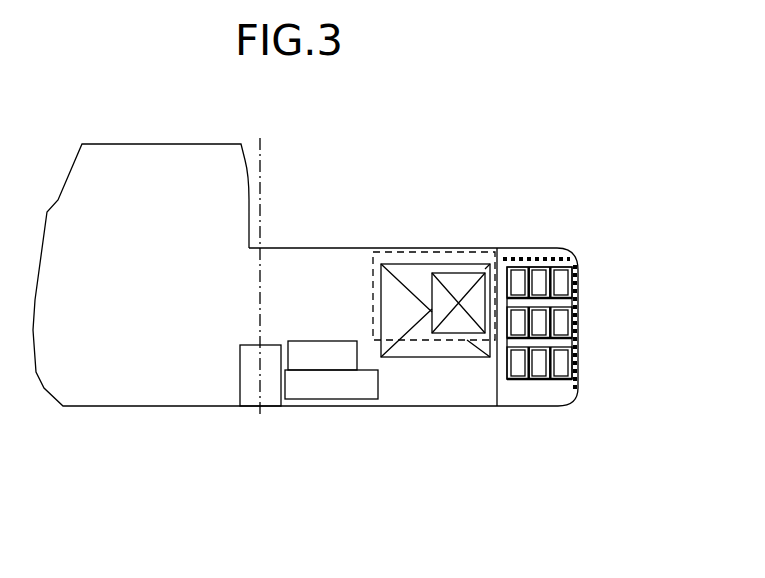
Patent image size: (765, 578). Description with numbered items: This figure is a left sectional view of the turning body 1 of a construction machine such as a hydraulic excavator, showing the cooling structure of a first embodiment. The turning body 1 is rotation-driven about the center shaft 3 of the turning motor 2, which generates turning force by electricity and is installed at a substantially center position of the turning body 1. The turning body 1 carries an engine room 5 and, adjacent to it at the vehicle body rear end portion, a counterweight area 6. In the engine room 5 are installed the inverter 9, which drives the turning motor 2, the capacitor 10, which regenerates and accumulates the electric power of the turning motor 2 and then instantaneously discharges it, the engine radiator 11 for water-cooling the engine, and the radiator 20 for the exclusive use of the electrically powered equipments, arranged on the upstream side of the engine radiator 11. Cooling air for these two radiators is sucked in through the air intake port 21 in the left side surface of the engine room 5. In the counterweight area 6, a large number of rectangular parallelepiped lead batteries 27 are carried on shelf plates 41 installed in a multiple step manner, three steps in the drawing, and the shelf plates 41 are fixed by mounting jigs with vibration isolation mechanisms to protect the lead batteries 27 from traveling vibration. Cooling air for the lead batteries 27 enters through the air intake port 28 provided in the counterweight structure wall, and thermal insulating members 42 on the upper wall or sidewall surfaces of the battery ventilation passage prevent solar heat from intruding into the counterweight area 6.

The turning body 1 is at (165, 392).
The turning motor 2 is at (248, 395).
The center shaft 3 is at (260, 290).
The engine room 5 is at (405, 398).
The counterweight area 6 is at (530, 393).
The inverter 9 is at (328, 360).
The capacitor 10 is at (348, 390).
The engine radiator 11 is at (415, 273).
The radiator for the exclusive use of the electrically powered equipments 20 is at (455, 280).
The air intake port 21 is at (368, 295).
The lead batteries 27 is at (564, 288).
The air intake port 28 is at (572, 264).
The shelf plates 41 is at (562, 383).
The thermal insulating members 42 is at (518, 258).